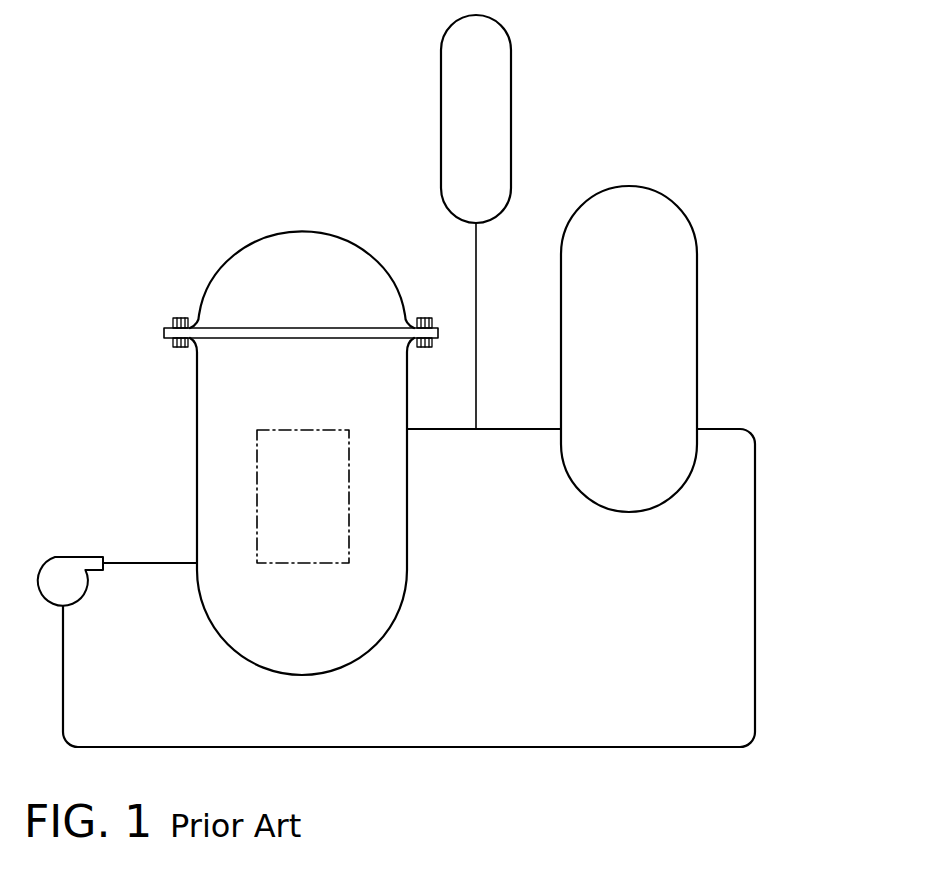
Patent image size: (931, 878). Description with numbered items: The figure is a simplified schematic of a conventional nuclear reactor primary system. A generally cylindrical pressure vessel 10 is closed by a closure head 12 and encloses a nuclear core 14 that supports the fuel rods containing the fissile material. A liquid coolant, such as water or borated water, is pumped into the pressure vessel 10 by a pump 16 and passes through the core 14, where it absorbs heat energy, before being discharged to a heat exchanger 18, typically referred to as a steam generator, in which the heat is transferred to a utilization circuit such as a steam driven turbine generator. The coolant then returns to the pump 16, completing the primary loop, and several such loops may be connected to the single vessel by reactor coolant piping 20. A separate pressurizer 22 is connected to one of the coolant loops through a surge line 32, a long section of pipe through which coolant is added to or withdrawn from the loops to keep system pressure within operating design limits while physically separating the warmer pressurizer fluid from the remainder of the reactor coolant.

The pressure vessel 10 is at (412, 554).
The closure head 12 is at (208, 276).
The nuclear core 14 is at (257, 480).
The pump 16 is at (57, 557).
The heat exchanger 18 is at (697, 290).
The reactor coolant piping 20 is at (755, 678).
The pressurizer 22 is at (512, 110).
The surge line 32 is at (477, 316).